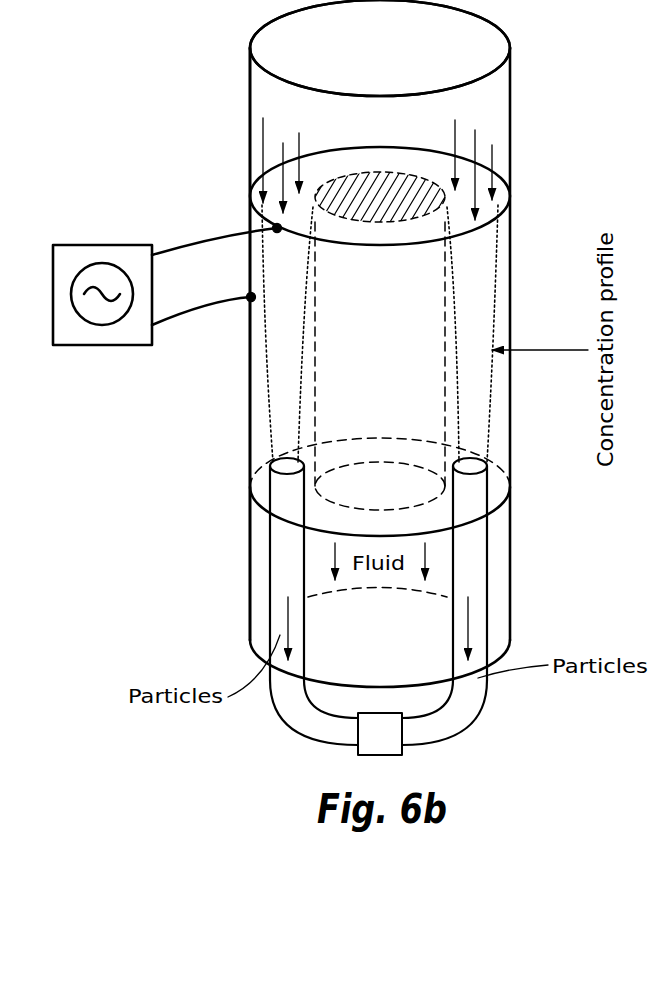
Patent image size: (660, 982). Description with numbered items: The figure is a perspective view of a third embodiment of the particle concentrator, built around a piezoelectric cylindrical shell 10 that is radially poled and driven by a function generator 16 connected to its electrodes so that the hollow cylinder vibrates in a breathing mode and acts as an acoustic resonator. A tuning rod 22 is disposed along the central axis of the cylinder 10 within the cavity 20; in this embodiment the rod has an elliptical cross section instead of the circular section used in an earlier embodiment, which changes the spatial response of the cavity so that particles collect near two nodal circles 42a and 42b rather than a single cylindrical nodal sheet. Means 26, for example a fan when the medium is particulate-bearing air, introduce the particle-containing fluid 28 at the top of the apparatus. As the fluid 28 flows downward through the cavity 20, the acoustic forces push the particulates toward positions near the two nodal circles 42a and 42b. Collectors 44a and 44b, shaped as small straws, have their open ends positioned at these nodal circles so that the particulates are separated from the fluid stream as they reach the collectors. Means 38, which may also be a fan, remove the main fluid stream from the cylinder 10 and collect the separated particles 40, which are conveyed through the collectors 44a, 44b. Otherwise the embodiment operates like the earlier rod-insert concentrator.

The piezoelectric cylindrical shell 10 is at (512, 243).
The function generator 16 is at (103, 347).
The cavity 20 is at (308, 170).
The tuning rod 22 is at (313, 365).
The means for introducing a fluid 26 is at (250, 102).
The fluid 28 is at (394, 133).
The means for removing the fluid and collecting particles 38 is at (511, 560).
The separated particles 40 is at (396, 745).
The first nodal circle 42a is at (282, 474).
The second nodal circle 42b is at (474, 471).
The first collector 44a is at (270, 565).
The second collector 44b is at (490, 607).